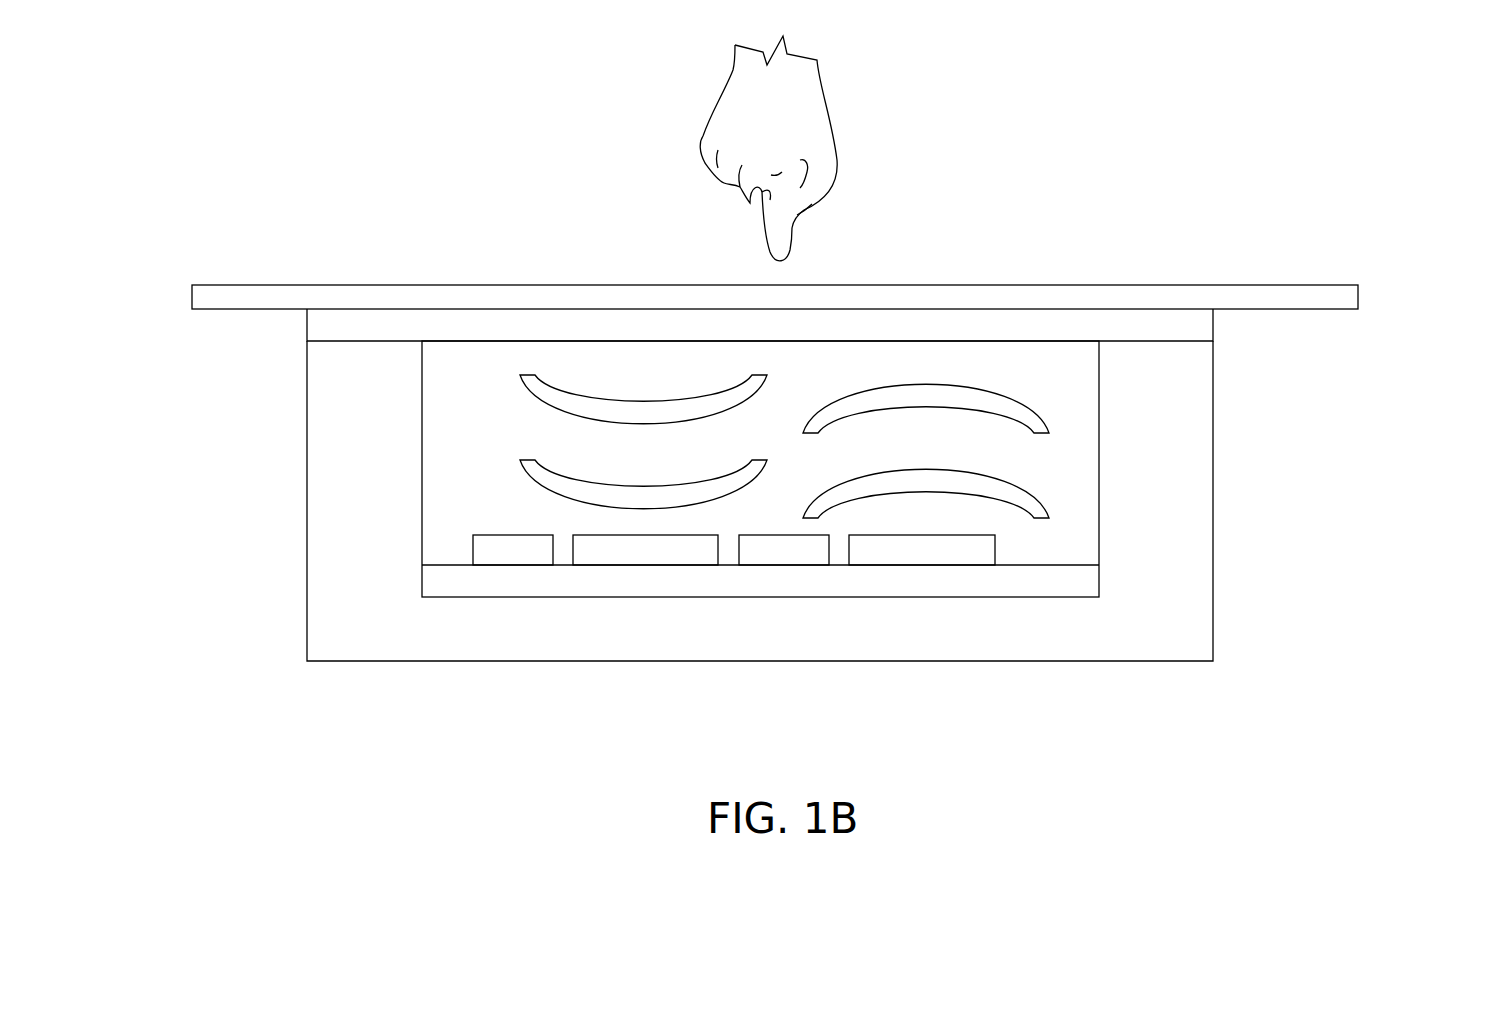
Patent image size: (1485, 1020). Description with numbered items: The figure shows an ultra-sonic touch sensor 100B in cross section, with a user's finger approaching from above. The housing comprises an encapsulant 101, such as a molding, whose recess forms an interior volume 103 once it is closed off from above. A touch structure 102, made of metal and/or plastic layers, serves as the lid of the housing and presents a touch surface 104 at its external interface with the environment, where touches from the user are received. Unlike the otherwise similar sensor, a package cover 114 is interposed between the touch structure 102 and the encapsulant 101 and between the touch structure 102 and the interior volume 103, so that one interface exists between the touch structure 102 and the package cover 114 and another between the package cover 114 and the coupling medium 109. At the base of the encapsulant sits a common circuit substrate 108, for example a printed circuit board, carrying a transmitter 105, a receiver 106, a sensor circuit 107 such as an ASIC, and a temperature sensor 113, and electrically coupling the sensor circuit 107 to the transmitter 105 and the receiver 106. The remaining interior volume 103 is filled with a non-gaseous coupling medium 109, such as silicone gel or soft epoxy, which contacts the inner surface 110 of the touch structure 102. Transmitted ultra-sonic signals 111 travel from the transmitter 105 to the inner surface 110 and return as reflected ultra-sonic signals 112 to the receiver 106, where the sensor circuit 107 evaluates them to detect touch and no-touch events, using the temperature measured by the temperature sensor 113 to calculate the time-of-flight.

The ultra-sonic touch sensor 100B is at (229, 118).
The encapsulant 101 is at (328, 470).
The touch structure 102 is at (1361, 296).
The interior volume 103 is at (467, 409).
The touch surface 104 is at (1036, 285).
The transmitter 105 is at (920, 565).
The receiver 106 is at (645, 565).
The sensor circuit 107 is at (776, 565).
The common circuit substrate 108 is at (1043, 578).
The coupling medium 109 is at (1056, 463).
The inner surface 110 is at (476, 308).
The transmitted ultra-sonic signals 111 is at (951, 381).
The reflected ultra-sonic signals 112 is at (533, 490).
The temperature sensor 113 is at (473, 552).
The package cover 114 is at (342, 322).